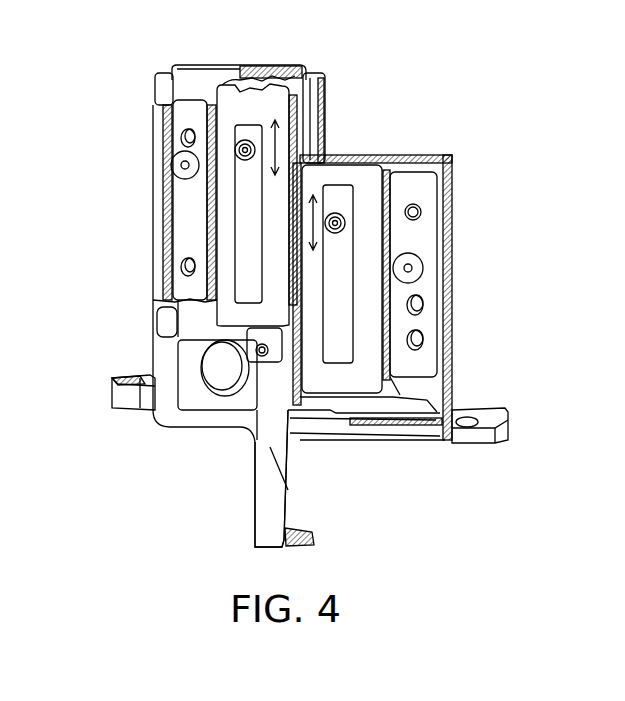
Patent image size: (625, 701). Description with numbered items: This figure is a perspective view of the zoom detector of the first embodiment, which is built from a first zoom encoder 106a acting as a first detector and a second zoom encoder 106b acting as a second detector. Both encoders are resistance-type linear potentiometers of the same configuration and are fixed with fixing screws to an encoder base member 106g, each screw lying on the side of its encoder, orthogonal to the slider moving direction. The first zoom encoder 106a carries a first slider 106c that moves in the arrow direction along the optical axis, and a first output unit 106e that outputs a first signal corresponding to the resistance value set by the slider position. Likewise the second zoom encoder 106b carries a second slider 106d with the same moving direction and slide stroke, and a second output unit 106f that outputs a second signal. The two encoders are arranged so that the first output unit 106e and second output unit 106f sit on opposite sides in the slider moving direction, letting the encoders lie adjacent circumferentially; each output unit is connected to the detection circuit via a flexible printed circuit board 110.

The first zoom encoder 106a is at (240, 108).
The second zoom encoder 106b is at (370, 207).
The first slider 106c is at (185, 163).
The second slider 106d is at (350, 222).
The first output unit 106e is at (265, 75).
The second output unit 106f is at (397, 440).
The encoder base member 106g is at (323, 80).
The flexible printed circuit board 110 is at (270, 447).